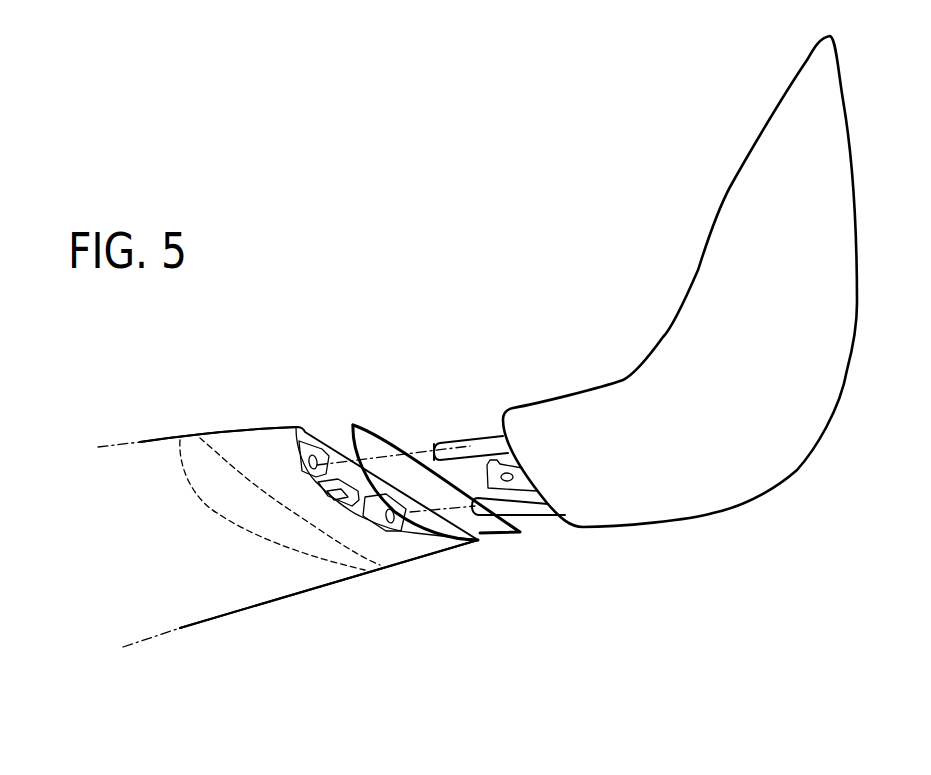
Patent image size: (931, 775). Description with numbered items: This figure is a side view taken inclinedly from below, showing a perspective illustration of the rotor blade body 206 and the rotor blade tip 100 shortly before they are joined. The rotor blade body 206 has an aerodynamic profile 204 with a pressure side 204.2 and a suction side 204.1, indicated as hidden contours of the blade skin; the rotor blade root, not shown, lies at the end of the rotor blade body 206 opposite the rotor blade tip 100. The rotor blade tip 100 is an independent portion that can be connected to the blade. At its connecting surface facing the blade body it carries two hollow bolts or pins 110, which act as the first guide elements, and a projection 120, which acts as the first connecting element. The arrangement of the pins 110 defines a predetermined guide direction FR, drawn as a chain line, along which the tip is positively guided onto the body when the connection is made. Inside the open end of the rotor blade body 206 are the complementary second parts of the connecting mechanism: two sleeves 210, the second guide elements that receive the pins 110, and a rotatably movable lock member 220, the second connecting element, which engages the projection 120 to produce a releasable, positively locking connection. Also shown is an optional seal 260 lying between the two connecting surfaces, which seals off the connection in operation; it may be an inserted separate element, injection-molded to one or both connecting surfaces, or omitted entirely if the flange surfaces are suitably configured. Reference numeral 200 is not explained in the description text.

The rotor blade tip 100 is at (632, 175).
The hollow bolts or pins 110 is at (447, 443).
The projection 120 is at (492, 462).
The wing tip / fairing body 200 is at (347, 590).
The aerodynamic profile 204 is at (202, 437).
The suction side 204.1 is at (237, 460).
The pressure side 204.2 is at (177, 458).
The rotor blade body 206 is at (150, 588).
The sleeves 210 is at (319, 440).
The lock member 220 is at (333, 478).
The seal 260 is at (493, 535).
The guide direction FR is at (430, 452).